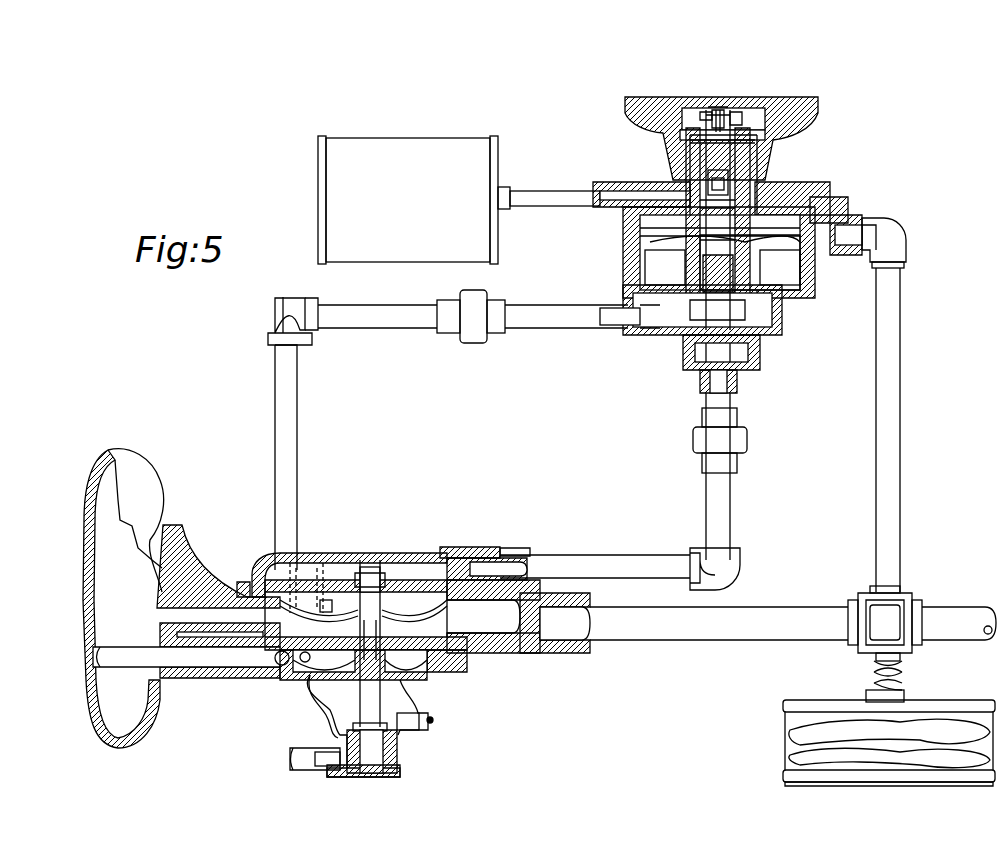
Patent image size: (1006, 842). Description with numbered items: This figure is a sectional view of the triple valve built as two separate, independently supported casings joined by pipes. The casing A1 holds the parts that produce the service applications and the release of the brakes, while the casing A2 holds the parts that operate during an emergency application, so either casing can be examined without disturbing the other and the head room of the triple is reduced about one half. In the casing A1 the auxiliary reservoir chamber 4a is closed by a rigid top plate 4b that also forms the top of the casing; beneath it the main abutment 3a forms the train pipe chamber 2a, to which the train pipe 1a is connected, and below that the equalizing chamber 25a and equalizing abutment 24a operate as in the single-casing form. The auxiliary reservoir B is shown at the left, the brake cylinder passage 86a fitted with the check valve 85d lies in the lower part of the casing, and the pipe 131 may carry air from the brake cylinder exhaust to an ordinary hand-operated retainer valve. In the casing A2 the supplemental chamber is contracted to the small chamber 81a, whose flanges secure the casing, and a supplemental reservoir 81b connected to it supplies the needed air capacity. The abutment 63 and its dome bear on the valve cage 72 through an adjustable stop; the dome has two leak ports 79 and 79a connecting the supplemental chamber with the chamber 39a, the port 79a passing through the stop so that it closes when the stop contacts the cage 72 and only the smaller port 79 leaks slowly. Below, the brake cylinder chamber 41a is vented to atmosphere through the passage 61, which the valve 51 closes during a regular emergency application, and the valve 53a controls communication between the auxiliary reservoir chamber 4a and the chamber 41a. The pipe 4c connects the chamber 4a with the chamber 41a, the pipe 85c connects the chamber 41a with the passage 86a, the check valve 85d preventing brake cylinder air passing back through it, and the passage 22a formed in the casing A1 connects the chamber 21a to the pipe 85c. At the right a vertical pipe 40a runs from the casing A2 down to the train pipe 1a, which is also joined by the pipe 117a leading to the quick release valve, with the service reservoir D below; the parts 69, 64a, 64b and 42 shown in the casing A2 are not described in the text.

The leak port 79 is at (697, 122).
The valve stem cap 64b is at (713, 113).
The leak port 79a is at (718, 115).
The contracted chamber 81a is at (743, 117).
The casing A2 is at (730, 228).
The diaphragm plate 64a is at (693, 138).
The valve cage 72 is at (780, 137).
The valve member 69 is at (707, 190).
The abutment 63 is at (780, 207).
The outlet flange 42 is at (800, 188).
The chamber 39a is at (835, 215).
The supplemental reservoir 81b is at (430, 150).
The pipe 85c is at (556, 315).
The brake cylinder chamber 41a is at (680, 317).
The vent passage 61 is at (785, 310).
The valve 51 is at (760, 340).
The valve 53a is at (757, 368).
The vertical pipe 40a is at (890, 482).
The train pipe 1a is at (958, 618).
The pipe 117a is at (900, 680).
The service reservoir D is at (800, 760).
The auxiliary reservoir B is at (140, 490).
The brake cylinder passage 86a is at (235, 655).
The check valve 85d is at (250, 588).
The top plate 4b is at (312, 565).
The passage 22a is at (337, 590).
The casing A1 is at (406, 651).
The auxiliary reservoir chamber 4a is at (416, 578).
The main abutment 3a is at (450, 580).
The pipe 4c is at (598, 565).
The train pipe chamber 2a is at (427, 618).
The chamber 21a is at (435, 660).
The equalizing abutment 24a is at (432, 722).
The equalizing chamber 25a is at (330, 690).
The pipe 131 is at (302, 764).